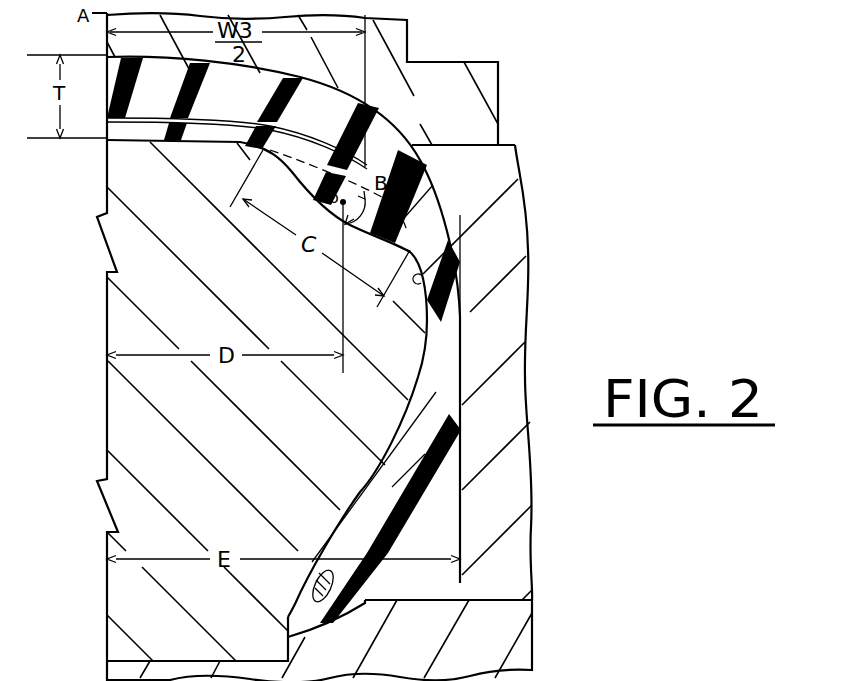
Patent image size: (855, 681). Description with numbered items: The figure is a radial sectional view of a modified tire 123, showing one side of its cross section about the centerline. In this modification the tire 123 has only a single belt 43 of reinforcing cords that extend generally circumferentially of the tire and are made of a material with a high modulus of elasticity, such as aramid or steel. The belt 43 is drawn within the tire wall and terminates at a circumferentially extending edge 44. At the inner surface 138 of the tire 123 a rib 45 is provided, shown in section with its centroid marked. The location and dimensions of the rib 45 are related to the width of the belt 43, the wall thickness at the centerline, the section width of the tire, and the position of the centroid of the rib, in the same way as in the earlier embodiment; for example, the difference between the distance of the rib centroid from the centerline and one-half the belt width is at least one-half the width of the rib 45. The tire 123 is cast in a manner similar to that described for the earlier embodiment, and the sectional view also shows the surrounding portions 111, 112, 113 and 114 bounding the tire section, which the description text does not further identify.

The belt 43 is at (282, 138).
The circumferentially extending edge 44 is at (388, 140).
The rib 45 is at (437, 190).
The upper mold section 111 is at (498, 100).
The lower mold section 112 is at (538, 632).
The side mold section 113 is at (525, 180).
The mold core body 114 is at (107, 412).
The tire 123 is at (450, 310).
The inner surface 138 is at (425, 282).